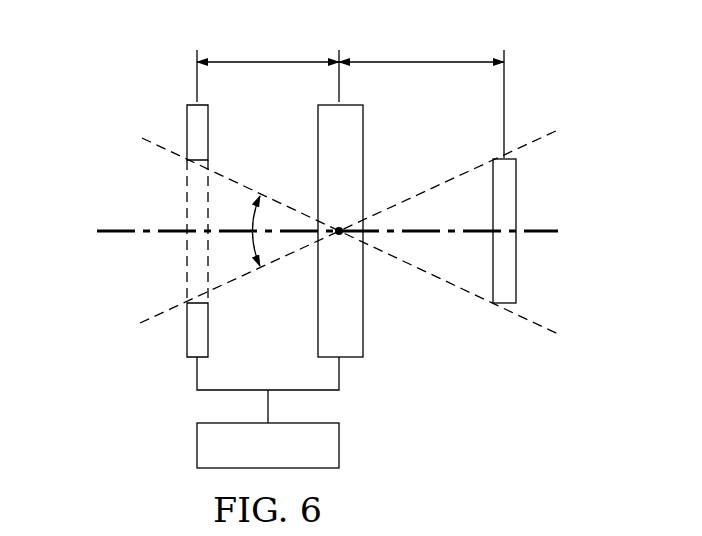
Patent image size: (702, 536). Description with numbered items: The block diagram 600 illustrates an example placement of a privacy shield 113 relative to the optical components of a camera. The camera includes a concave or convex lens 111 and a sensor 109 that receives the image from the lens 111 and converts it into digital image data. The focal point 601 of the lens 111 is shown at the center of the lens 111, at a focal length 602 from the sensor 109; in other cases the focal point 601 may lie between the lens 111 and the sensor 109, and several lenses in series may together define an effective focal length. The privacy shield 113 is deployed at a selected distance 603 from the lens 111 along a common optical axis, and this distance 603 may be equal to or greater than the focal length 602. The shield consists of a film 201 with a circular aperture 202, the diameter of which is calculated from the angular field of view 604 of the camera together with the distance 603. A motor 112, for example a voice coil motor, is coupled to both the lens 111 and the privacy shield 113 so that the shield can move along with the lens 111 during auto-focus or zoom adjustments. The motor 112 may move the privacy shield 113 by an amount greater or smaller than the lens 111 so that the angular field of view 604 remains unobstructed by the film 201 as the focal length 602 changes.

The optical system 600 is at (568, 59).
The sensor 109 is at (517, 192).
The lens 111 is at (364, 126).
The motor 112 is at (196, 444).
The privacy shield 113 is at (95, 259).
The film 201 is at (187, 117).
The circular aperture 202 is at (190, 272).
The focal point 601 is at (342, 237).
The focal length 602 is at (420, 59).
The selected distance 603 is at (268, 59).
The angular field of view 604 is at (251, 194).